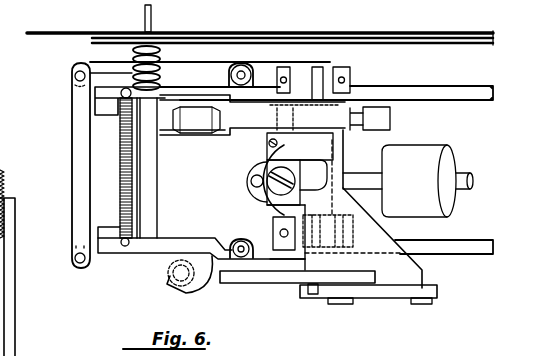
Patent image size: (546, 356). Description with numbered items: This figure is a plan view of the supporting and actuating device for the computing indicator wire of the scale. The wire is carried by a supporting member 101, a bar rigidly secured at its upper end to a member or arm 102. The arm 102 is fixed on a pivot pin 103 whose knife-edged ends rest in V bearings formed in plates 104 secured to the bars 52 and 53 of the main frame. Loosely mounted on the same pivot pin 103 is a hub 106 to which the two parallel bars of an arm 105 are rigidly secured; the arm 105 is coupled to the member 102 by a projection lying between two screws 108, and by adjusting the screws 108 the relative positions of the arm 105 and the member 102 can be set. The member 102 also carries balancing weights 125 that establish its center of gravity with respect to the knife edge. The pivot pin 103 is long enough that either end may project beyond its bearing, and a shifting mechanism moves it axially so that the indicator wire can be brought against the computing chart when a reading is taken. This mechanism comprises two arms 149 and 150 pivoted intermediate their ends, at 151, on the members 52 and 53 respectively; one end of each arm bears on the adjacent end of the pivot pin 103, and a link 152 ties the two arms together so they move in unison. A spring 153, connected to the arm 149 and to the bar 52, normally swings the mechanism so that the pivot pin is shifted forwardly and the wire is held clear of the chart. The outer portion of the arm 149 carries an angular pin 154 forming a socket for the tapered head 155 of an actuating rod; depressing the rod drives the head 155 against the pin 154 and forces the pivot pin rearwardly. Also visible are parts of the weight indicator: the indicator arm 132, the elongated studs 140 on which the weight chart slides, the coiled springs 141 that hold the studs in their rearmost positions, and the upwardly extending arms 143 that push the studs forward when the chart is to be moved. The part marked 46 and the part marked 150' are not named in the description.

The upwardly extending arms 143 is at (145, 15).
The indicator arm 132 is at (192, 43).
The pivot 151 is at (240, 66).
The pivot pin 103 is at (329, 63).
The plates 104 is at (359, 64).
The hub 106 is at (338, 113).
The bar 52 is at (458, 96).
The frame 46 is at (0, 95).
The springs 141 is at (133, 51).
The upper bracket 150' is at (220, 77).
The arm 105 is at (224, 138).
The screws 108 is at (278, 145).
The link 152 is at (72, 200).
The spring 153 is at (120, 195).
The elongated studs 140 is at (152, 184).
The weights 125 is at (238, 192).
The arm 150 is at (97, 233).
The member or arm 102 is at (388, 238).
The bar 53 is at (475, 255).
The tapered head 155 is at (168, 277).
The angular pin 154 is at (168, 292).
The arm 149 is at (262, 268).
The supporting member 101 is at (385, 297).